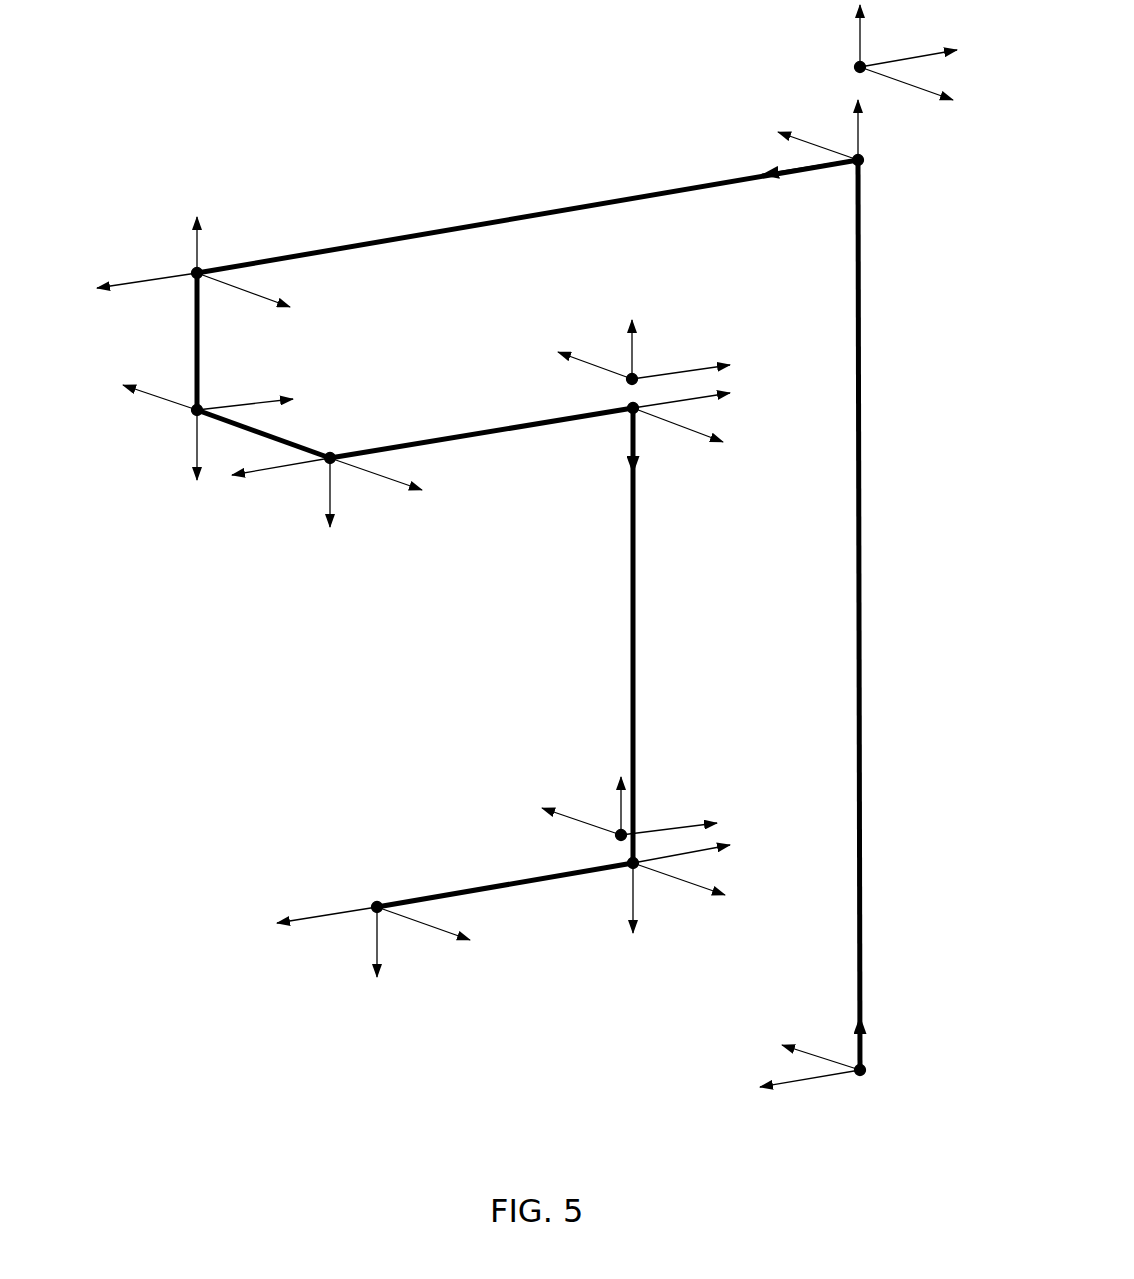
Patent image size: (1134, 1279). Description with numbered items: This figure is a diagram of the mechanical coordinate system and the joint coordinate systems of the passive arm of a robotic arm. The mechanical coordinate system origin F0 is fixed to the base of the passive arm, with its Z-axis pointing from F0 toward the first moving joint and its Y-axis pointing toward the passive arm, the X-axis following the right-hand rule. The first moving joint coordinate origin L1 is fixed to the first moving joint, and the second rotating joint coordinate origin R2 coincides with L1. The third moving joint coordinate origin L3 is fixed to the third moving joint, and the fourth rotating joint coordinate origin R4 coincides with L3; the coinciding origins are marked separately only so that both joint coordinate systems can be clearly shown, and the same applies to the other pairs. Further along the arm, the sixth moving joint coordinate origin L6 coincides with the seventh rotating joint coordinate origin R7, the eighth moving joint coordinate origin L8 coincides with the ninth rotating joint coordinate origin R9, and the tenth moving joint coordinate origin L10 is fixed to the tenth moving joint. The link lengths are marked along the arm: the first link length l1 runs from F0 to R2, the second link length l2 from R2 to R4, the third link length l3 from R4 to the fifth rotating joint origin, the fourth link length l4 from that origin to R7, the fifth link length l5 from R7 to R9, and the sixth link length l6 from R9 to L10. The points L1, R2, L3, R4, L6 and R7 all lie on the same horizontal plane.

The mechanical coordinate system origin F0 is at (828, 1070).
The first moving joint coordinate origin L1 is at (834, 152).
The second rotating joint coordinate origin R2 is at (901, 60).
The third moving joint coordinate origin L3 is at (195, 250).
The fourth rotating joint coordinate origin R4 is at (275, 463).
The sixth moving joint coordinate origin L6 is at (678, 441).
The seventh rotating joint coordinate origin R7 is at (633, 343).
The eighth moving joint coordinate origin L8 is at (613, 802).
The ninth rotating joint coordinate origin R9 is at (672, 904).
The tenth moving joint coordinate origin L10 is at (396, 934).
The first link length l1 is at (877, 615).
The second link length l2 is at (527, 216).
The third link length l3 is at (263, 365).
The fourth link length l4 is at (481, 421).
The fifth link length l5 is at (650, 635).
The sixth link length l6 is at (505, 874).